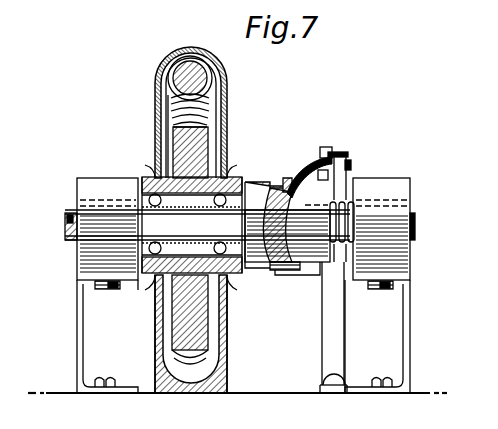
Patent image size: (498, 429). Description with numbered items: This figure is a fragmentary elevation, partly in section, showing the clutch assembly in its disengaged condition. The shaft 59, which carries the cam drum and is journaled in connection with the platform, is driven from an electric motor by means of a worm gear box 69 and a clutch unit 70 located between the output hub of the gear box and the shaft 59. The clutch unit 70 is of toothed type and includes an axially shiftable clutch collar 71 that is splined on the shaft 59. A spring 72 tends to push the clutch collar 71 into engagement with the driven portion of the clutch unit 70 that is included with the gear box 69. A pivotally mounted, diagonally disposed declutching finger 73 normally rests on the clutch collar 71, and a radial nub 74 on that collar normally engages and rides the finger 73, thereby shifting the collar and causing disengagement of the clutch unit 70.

The shaft 59 is at (66, 229).
The worm gear box 69 is at (148, 100).
The clutch unit 70 is at (268, 178).
The clutch collar 71 is at (297, 270).
The spring 72 is at (355, 212).
The declutching finger 73 is at (296, 186).
The radial nub 74 is at (331, 152).